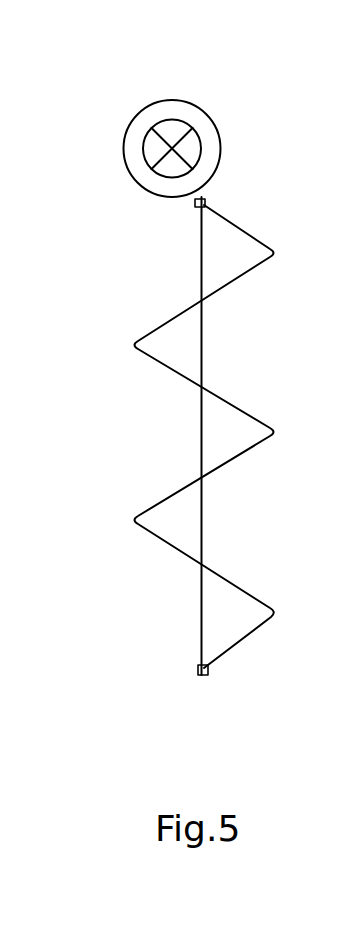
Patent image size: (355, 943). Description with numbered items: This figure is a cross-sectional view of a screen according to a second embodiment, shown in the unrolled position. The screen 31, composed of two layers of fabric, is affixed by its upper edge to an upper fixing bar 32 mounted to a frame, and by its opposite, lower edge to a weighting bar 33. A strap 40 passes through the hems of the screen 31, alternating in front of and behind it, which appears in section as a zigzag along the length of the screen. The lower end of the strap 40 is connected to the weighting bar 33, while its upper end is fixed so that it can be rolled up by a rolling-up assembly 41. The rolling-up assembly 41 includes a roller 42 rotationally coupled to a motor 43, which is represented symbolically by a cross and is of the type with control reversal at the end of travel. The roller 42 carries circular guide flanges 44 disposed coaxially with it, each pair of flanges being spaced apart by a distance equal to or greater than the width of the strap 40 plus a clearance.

The rolling-up assembly 41 is at (205, 117).
The roller 42 is at (175, 120).
The motor 43 is at (142, 152).
The circular guide flanges 44 is at (208, 115).
The strap 40 is at (200, 262).
The screen 31 is at (228, 401).
The upper fixing bar 32 is at (207, 202).
The weighting bar 33 is at (208, 669).